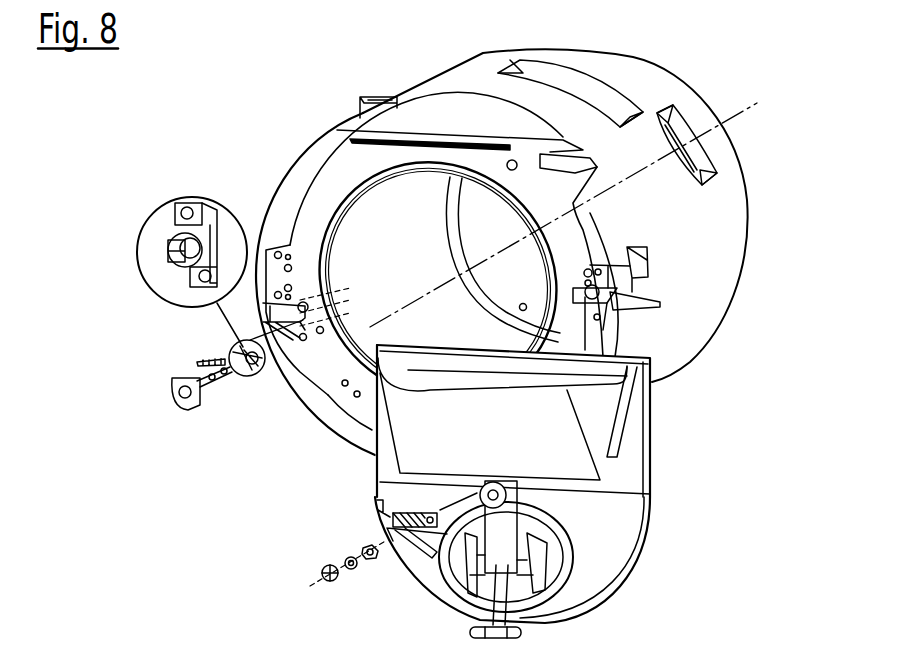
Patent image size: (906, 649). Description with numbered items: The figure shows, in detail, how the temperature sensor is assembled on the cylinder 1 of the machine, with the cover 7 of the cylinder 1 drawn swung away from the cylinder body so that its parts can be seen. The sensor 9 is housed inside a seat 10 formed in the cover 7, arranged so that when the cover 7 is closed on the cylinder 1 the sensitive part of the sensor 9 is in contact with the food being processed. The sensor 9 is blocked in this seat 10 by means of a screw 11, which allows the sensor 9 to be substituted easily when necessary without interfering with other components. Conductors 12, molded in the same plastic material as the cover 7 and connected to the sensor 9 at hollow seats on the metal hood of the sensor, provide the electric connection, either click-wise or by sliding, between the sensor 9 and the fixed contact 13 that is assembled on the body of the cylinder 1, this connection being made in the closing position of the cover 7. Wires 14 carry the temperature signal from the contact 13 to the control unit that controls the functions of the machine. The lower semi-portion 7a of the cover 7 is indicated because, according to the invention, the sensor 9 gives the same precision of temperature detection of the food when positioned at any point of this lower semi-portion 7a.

The cylinder 1 is at (711, 283).
The cover 7 is at (681, 538).
The lower semi-portion of the cover 7a is at (597, 556).
The sensor 9 is at (371, 562).
The seat 10 is at (388, 531).
The screw 11 is at (334, 582).
The conductors 12 is at (380, 527).
The fixed contact 13 is at (168, 256).
The wires 14 is at (197, 362).